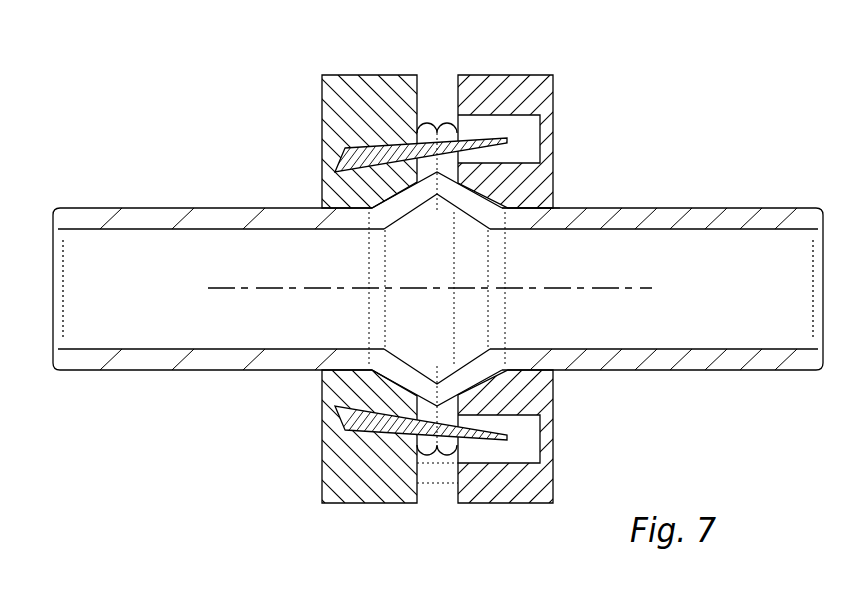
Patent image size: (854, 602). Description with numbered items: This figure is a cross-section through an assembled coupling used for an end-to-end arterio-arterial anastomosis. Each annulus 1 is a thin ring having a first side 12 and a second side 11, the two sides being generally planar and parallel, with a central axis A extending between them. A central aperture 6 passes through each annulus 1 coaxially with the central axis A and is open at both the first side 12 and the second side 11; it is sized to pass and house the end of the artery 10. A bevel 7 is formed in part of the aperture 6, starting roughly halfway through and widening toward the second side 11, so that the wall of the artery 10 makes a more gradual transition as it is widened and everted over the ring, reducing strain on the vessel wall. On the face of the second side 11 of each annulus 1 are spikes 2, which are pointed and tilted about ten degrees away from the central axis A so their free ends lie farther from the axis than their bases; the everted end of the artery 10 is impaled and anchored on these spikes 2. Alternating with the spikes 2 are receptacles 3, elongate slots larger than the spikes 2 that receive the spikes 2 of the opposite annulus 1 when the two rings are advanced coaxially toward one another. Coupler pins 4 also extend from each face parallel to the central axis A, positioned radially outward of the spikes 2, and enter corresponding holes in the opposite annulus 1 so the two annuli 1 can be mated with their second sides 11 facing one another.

The annulus 1 is at (343, 88).
The spikes 2 is at (350, 165).
The receptacles 3 is at (523, 445).
The coupler pins 4 is at (452, 480).
The aperture 6 is at (530, 207).
The bevel 7 is at (493, 196).
The artery 10 is at (86, 221).
The second side 11 is at (418, 88).
The first side 12 is at (320, 477).
The central axis A is at (317, 293).